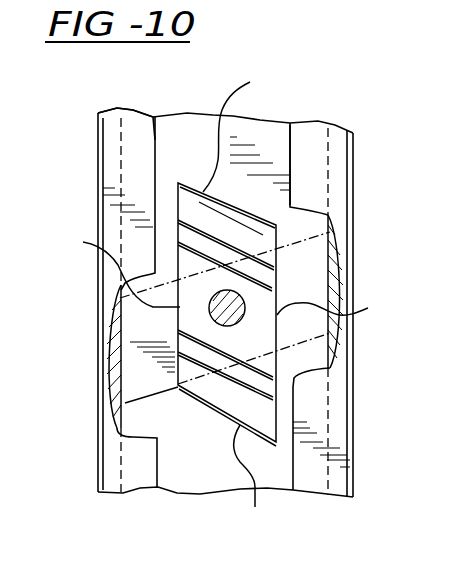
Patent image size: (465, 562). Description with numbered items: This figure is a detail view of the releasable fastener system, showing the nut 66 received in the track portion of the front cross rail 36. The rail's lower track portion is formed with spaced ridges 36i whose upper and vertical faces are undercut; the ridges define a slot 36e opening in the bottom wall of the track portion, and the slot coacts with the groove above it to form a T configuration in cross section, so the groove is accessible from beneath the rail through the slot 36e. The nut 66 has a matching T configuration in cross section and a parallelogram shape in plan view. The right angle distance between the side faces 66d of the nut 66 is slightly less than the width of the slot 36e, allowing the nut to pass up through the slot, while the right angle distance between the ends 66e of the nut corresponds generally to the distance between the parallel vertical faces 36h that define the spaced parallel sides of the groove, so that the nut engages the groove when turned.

The front cross rail 36 is at (360, 278).
The slot 36e is at (282, 141).
The vertical faces of the ridges 36h is at (132, 361).
The spaced ridges 36i is at (134, 118).
The nut 66 is at (237, 213).
The side faces of the nut 66d is at (223, 269).
The ends of the nut 66e is at (241, 294).